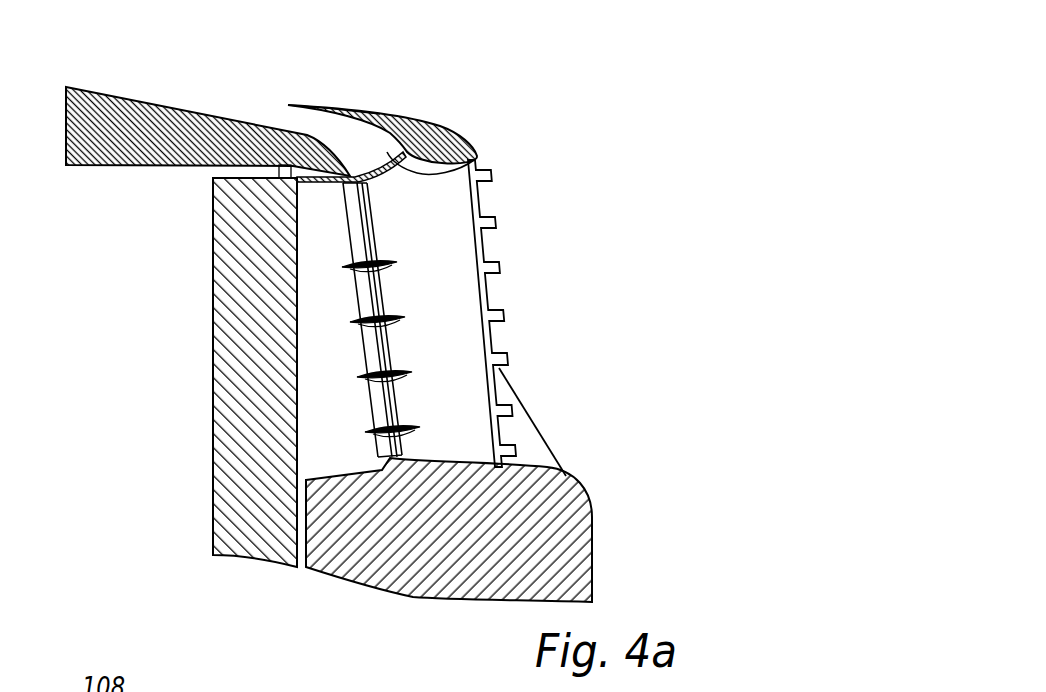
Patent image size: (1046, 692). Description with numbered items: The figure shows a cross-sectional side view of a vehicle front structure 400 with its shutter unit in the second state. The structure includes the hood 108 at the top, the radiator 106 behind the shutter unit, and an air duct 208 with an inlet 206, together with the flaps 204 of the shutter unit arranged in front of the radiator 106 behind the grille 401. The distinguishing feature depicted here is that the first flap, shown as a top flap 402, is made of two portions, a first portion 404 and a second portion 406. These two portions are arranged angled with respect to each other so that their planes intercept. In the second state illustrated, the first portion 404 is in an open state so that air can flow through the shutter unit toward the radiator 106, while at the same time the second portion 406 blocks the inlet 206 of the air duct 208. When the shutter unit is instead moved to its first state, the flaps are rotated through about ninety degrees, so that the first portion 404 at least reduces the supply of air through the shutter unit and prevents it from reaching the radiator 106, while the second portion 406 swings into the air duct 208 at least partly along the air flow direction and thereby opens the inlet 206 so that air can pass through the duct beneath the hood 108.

The radiator 106 is at (223, 397).
The hood 108 is at (113, 90).
The flaps 204 is at (407, 373).
The inlet 206 is at (385, 154).
The air duct 208 is at (337, 130).
The vehicle front structure 400 is at (604, 142).
The grille 401 is at (503, 312).
The top flap 402 is at (378, 196).
The first portion 404 is at (473, 143).
The second portion 406 is at (341, 184).